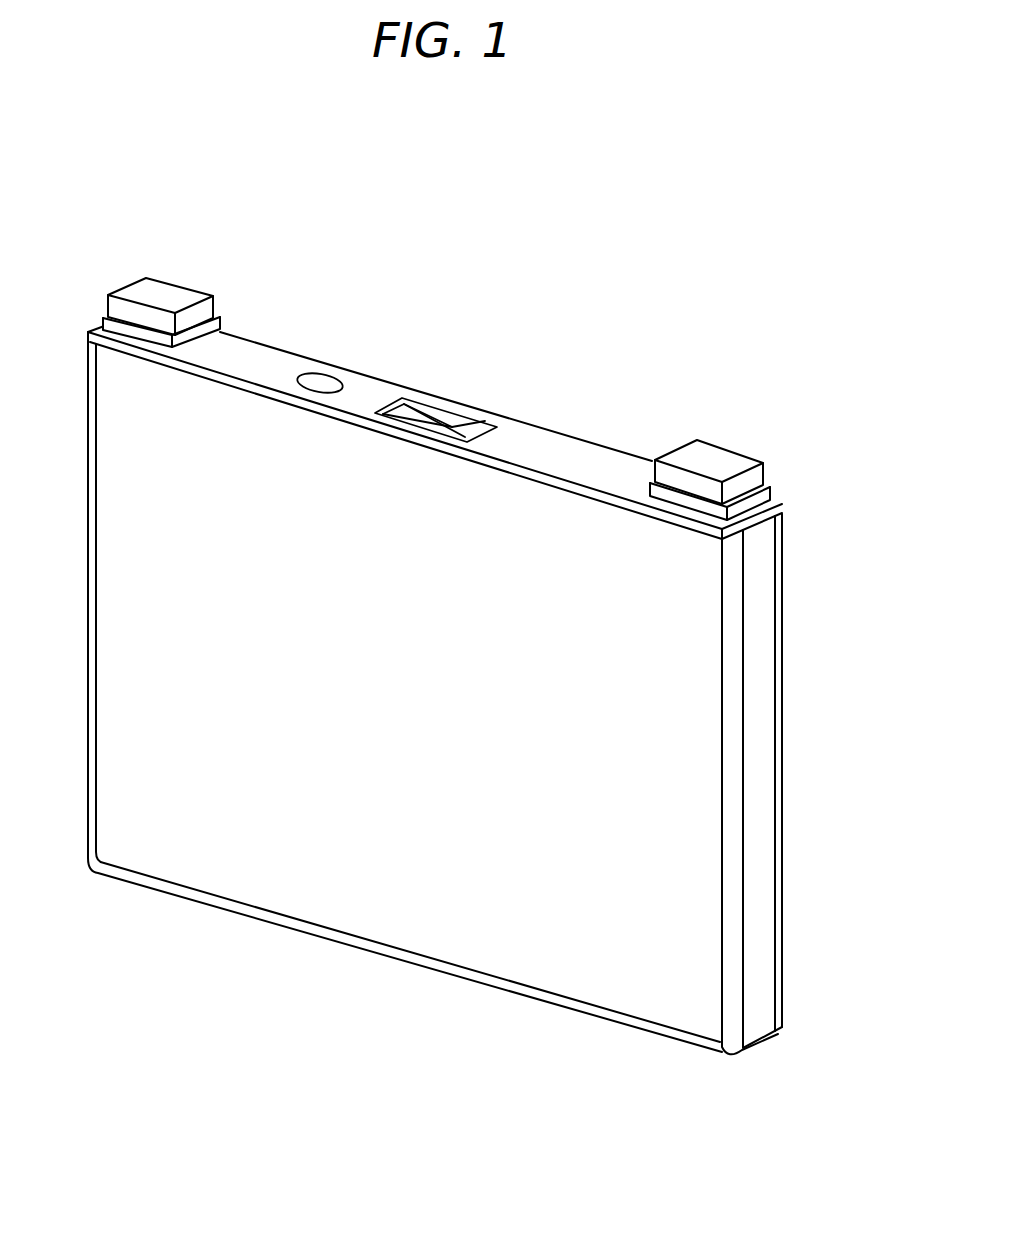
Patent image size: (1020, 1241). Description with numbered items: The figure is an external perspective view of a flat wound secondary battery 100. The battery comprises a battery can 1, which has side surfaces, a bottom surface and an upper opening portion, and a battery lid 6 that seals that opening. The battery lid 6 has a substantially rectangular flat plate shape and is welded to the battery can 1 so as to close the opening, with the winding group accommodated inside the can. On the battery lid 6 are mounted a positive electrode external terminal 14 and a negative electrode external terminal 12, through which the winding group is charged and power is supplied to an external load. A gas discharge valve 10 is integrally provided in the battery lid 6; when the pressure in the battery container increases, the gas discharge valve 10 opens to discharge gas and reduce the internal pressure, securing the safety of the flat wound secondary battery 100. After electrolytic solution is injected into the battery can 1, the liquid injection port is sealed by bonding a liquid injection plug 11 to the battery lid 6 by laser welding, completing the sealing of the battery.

The flat wound secondary battery 100 is at (650, 262).
The battery can 1 is at (363, 915).
The battery lid 6 is at (556, 447).
The gas discharge valve 10 is at (405, 400).
The liquid injection plug 11 is at (321, 380).
The negative electrode external terminal 12 is at (745, 456).
The positive electrode external terminal 14 is at (166, 300).